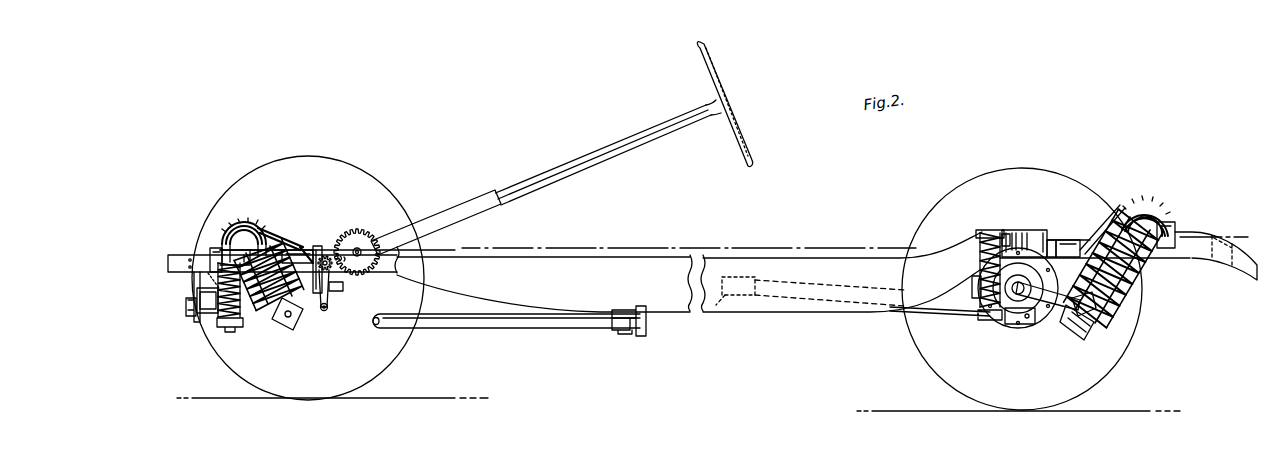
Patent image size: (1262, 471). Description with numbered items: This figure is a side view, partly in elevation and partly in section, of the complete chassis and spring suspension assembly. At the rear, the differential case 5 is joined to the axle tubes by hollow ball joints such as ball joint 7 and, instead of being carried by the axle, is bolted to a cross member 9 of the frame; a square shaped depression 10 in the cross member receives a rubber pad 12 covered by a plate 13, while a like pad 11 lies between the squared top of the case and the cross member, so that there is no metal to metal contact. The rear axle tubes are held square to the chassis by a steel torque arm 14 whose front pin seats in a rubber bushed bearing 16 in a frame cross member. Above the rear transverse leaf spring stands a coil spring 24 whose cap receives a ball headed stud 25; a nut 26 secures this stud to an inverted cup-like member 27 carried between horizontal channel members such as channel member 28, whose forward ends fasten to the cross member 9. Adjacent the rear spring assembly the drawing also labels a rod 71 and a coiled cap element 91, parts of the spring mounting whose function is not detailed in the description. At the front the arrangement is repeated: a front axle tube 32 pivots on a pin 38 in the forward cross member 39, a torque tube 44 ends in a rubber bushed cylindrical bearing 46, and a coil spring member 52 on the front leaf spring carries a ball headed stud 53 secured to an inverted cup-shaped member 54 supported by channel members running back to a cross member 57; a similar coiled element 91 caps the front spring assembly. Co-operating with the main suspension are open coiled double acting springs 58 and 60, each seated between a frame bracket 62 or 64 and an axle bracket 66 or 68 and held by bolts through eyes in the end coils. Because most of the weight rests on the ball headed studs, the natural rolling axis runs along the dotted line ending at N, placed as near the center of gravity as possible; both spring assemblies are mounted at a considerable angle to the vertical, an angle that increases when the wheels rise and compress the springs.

The differential case 5 is at (1050, 272).
The hollow ball joint 7 is at (733, 264).
The cross member 9 is at (980, 244).
The square shaped depression 10 is at (1028, 232).
The rubber pad 11 is at (1003, 240).
The rubber pad 12 is at (1016, 232).
The plate 13 is at (1010, 232).
The torque arm 14 is at (930, 309).
The rubber bushed bearing 16 is at (715, 306).
The coil spring 24 is at (1132, 286).
The ball headed stud 25 is at (1178, 228).
The nut 26 is at (1163, 222).
The inverted cup-like member 27 is at (1074, 254).
The horizontal channel member 28 is at (1050, 238).
The front axle tube 32 is at (218, 310).
The pin 38 is at (190, 306).
The forward cross member 39 is at (196, 283).
The torque tube 44 is at (376, 330).
The cylindrical bearing 46 is at (630, 331).
The coil spring member 52 is at (268, 304).
The ball headed stud 53 is at (235, 238).
The inverted cup-shaped member 54 is at (252, 232).
The cross member 57 is at (315, 252).
The open coiled double acting spring 58 is at (975, 282).
The open coiled double acting spring 60 is at (222, 323).
The bracket 62 is at (985, 252).
The bracket 64 is at (198, 256).
The bracket 66 is at (1008, 318).
The bracket 68 is at (233, 330).
The rod 71 is at (1094, 248).
The torsion spring 91 is at (227, 238).
The rolling axis end point N is at (164, 258).